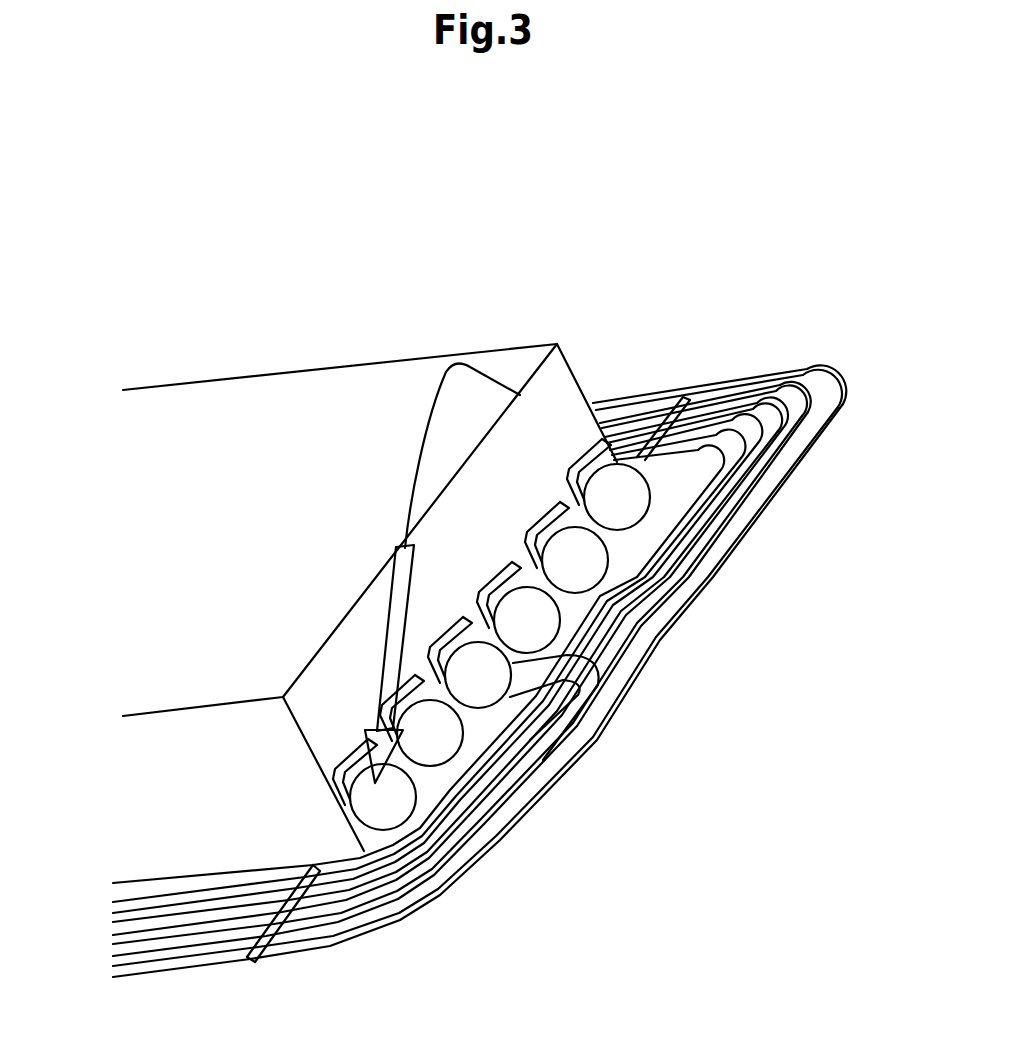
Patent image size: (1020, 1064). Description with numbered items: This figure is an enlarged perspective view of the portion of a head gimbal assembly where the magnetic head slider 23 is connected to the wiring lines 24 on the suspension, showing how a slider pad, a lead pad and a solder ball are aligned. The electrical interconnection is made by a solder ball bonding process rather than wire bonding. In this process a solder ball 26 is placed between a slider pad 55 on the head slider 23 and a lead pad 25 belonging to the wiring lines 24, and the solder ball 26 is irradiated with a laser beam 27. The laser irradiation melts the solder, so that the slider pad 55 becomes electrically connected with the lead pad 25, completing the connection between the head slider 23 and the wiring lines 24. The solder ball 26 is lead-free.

The head slider 23 is at (307, 428).
The wiring lines 24 is at (337, 918).
The lead pad 25 is at (590, 753).
The solder ball 26 is at (390, 797).
The laser beam 27 is at (557, 344).
The slider pad 55 is at (353, 737).